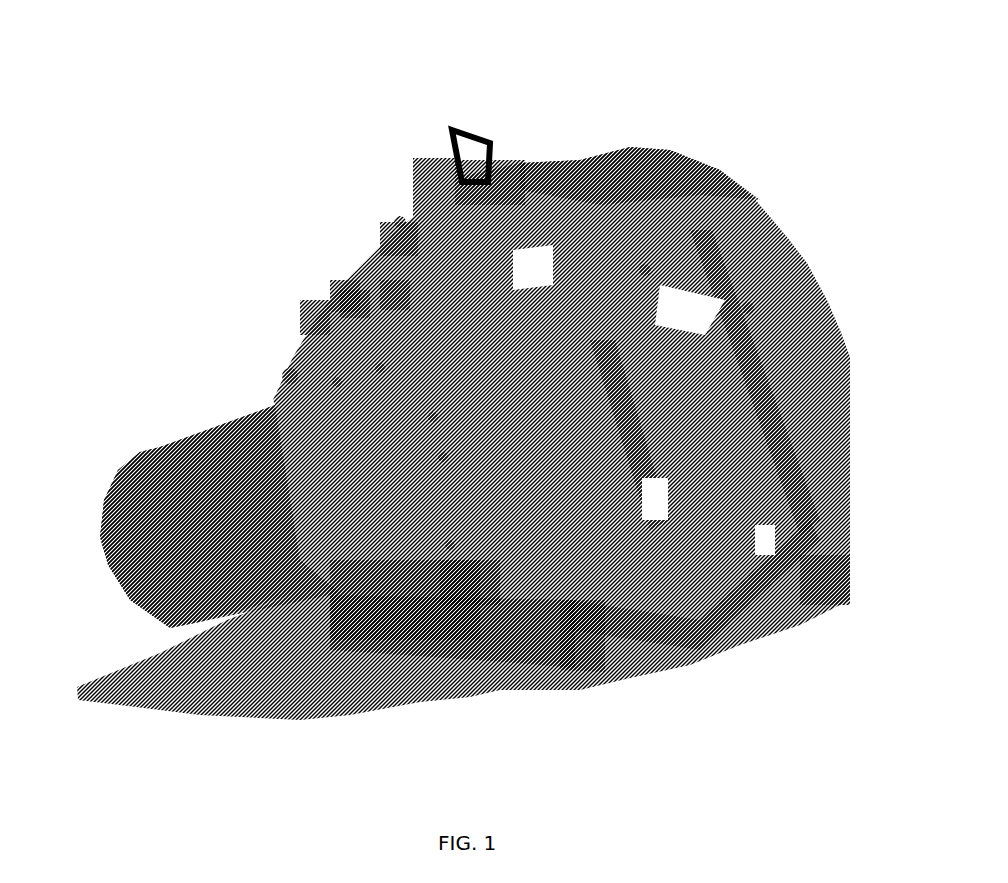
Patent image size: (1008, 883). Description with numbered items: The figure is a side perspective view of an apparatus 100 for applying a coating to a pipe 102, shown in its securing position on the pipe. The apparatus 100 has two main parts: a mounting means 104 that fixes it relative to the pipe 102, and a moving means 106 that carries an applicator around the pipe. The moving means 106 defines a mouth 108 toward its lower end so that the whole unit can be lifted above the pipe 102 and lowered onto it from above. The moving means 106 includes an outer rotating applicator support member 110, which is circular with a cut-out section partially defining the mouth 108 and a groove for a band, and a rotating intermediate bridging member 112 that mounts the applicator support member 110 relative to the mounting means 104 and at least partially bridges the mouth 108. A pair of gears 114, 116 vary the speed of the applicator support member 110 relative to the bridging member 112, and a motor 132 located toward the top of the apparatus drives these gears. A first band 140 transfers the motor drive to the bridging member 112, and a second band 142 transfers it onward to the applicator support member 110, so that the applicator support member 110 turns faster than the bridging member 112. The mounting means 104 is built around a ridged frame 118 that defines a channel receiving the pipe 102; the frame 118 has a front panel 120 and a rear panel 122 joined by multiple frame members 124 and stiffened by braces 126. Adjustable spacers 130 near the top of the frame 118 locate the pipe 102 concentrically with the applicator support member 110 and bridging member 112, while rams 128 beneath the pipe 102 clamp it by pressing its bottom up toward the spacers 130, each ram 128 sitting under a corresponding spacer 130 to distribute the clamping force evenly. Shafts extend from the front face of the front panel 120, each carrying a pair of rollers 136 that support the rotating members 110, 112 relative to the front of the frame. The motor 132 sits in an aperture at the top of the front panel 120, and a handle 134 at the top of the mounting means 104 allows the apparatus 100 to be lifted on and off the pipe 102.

The apparatus 100 is at (714, 80).
The pipe 102 is at (138, 585).
The mounting means 104 is at (530, 697).
The moving means 106 is at (477, 592).
The mouth 108 is at (392, 596).
The outer rotating applicator support member 110 is at (284, 376).
The rotating intermediate bridging member 112 is at (313, 317).
The gear 114 is at (346, 300).
The gear 116 is at (396, 238).
The ridged frame 118 is at (684, 184).
The front panel 120 is at (576, 666).
The rear panel 122 is at (822, 582).
The frame members 124 is at (806, 530).
The braces 126 is at (659, 522).
The rams 128 is at (695, 593).
The adjustable spacers 130 is at (398, 220).
The motor 132 is at (518, 195).
The handle 134 is at (464, 128).
The rollers 136 is at (449, 543).
The first band 140 is at (395, 296).
The second band 142 is at (352, 304).